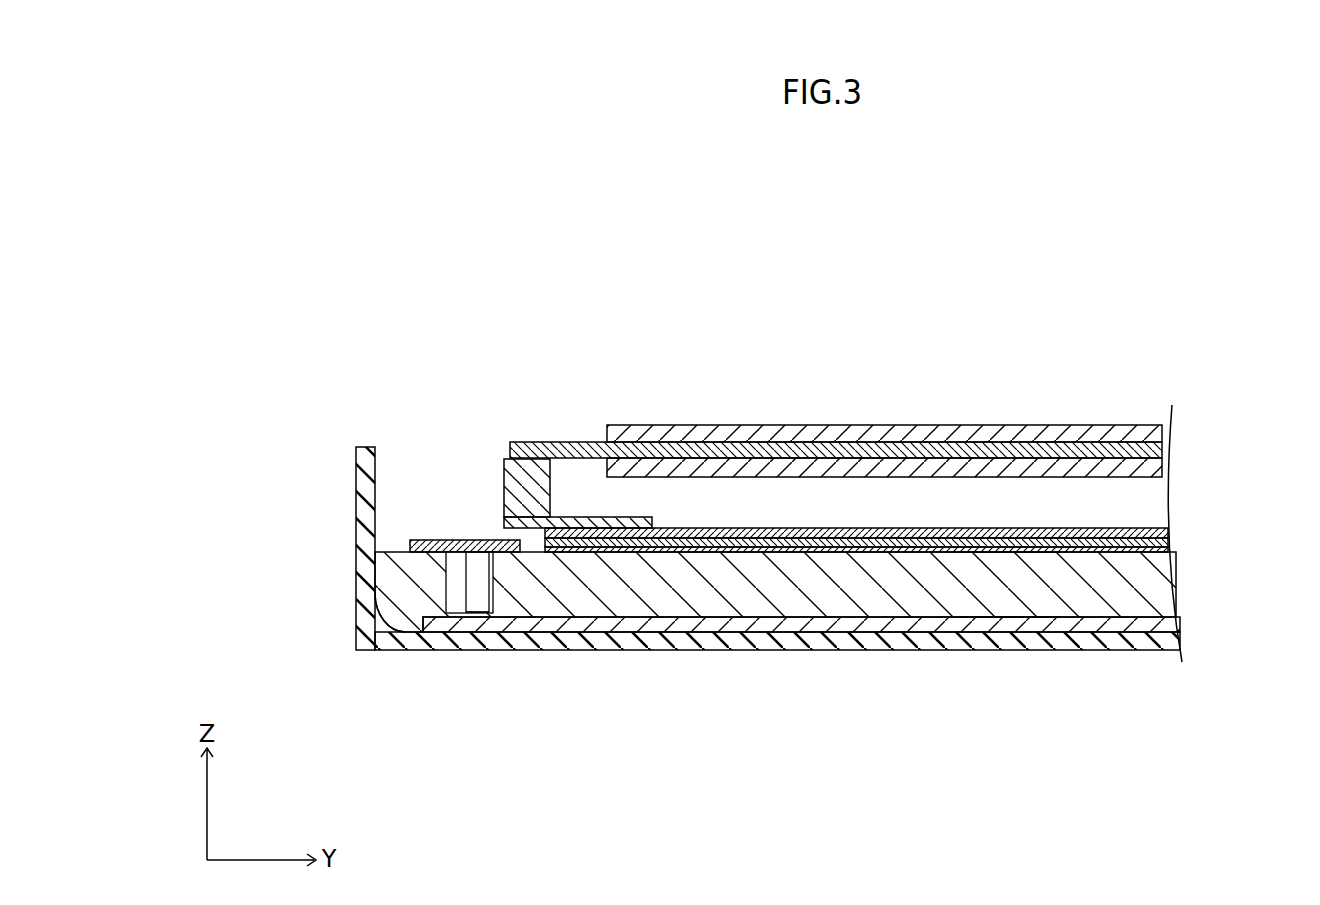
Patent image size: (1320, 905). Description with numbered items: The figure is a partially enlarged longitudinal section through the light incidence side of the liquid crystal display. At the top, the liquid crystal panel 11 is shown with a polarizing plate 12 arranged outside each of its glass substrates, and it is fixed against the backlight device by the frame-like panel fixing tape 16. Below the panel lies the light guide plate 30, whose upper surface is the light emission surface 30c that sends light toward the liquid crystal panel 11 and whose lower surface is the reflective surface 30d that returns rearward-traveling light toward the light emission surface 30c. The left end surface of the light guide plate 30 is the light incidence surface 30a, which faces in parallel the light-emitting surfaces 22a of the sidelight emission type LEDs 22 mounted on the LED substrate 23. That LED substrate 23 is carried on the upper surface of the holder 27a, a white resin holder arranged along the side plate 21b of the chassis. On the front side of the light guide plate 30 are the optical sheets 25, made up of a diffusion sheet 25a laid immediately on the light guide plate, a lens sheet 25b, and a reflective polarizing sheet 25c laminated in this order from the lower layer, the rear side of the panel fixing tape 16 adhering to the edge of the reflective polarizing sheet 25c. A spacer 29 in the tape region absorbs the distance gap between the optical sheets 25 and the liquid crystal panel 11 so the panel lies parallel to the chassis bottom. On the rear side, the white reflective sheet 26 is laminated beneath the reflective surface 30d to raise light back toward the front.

The liquid crystal panel 11 is at (567, 447).
The polarizing plate 12 is at (897, 467).
The panel fixing tape 16 is at (633, 520).
The side plate 21b is at (362, 515).
The LED 22 is at (475, 563).
The light-emitting surface 22a is at (488, 592).
The LED substrate 23 is at (440, 540).
The optical sheets 25 is at (916, 503).
The diffusion sheet 25a is at (887, 545).
The lens sheet 25b is at (1167, 538).
The reflective polarizing sheet 25c is at (1127, 533).
The reflective sheet 26 is at (555, 623).
The holder 27a is at (385, 587).
The spacer 29 is at (522, 468).
The light guide plate 30 is at (653, 603).
The light incidence surface 30a is at (492, 572).
The light emission surface 30c is at (1008, 550).
The reflective surface 30d is at (1013, 620).